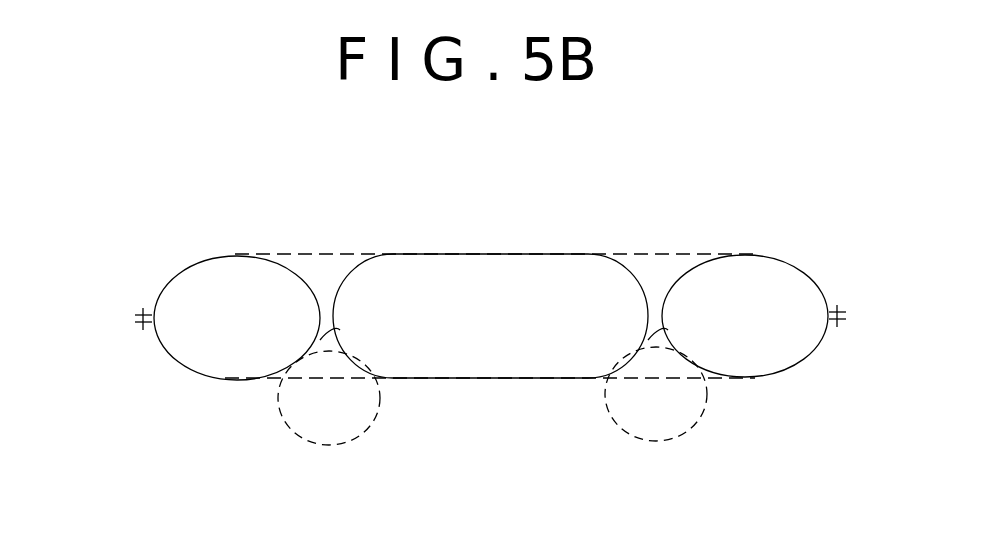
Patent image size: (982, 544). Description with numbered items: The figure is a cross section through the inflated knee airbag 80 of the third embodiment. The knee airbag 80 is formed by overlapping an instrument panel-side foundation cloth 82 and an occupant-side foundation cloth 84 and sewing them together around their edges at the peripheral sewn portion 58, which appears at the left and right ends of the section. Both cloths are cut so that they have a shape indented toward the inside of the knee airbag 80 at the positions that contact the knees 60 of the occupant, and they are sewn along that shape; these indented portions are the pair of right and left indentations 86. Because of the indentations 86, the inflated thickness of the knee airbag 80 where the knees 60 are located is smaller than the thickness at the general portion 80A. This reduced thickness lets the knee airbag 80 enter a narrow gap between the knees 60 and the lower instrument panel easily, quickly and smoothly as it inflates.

The knee airbag 80 is at (563, 236).
The general portion 80A is at (174, 364).
The instrument panel-side foundation cloth 82 is at (232, 256).
The occupant-side foundation cloth 84 is at (213, 380).
The indentations 86 is at (320, 346).
The peripheral sewn portion 58 is at (142, 330).
The knees 60 is at (372, 420).